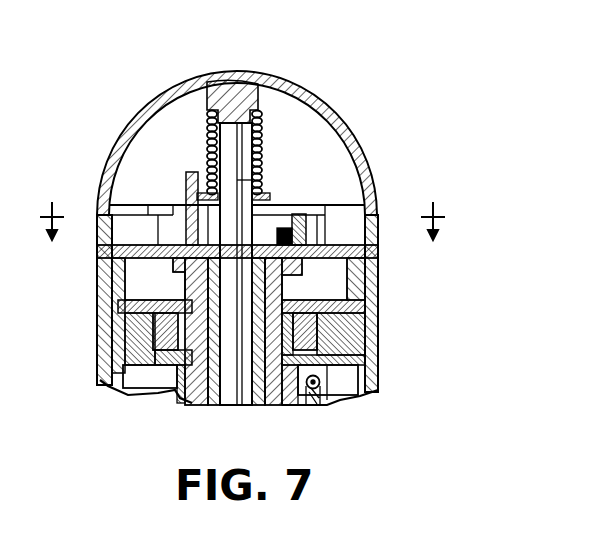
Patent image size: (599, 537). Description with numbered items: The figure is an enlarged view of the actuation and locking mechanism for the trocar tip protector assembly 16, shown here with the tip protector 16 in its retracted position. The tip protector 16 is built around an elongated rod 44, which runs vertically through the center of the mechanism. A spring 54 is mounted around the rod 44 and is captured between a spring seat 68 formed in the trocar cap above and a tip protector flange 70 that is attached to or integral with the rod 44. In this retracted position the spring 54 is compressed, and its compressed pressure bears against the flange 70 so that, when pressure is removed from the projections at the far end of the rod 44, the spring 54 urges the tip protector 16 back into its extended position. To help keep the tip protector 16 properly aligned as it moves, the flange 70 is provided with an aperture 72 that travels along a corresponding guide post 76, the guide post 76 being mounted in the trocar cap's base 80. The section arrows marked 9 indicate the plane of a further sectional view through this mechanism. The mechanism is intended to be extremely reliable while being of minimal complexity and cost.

The spring seat 68 is at (236, 86).
The spring 54 is at (262, 140).
The elongated rod 44 is at (254, 180).
The tip protector flange 70 is at (268, 198).
The aperture 72 is at (186, 226).
The guide post 76 is at (183, 233).
The trocar cap's base 80 is at (378, 251).
The trocar tip protector assembly 16 is at (228, 375).
The section line 9- 9 is at (242, 209).